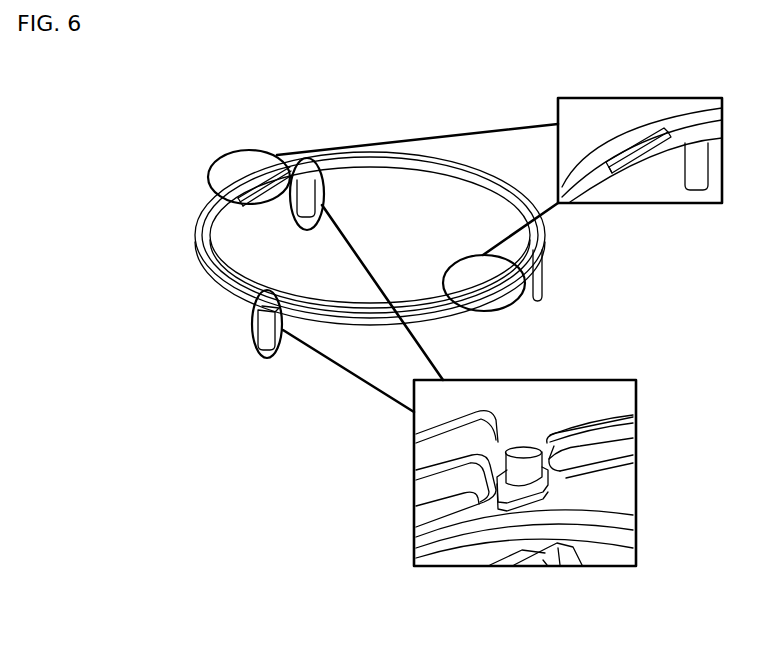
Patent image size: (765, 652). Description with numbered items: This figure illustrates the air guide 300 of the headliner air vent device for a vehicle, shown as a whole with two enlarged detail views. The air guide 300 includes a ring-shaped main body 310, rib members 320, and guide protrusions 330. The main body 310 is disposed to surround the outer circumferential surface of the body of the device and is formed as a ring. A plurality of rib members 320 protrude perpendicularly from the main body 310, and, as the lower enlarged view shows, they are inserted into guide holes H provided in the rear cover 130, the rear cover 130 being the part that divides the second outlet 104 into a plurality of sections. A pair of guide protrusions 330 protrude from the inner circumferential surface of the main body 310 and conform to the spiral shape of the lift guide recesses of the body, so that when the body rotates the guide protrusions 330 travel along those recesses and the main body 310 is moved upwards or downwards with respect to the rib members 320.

The air guide 300 is at (560, 263).
The main body 310 is at (378, 160).
The rib members 320 is at (543, 284).
The guide protrusions 330 is at (258, 170).
The second outlet 104 is at (597, 453).
The guide holes H is at (547, 467).
The rear cover 130 is at (510, 518).